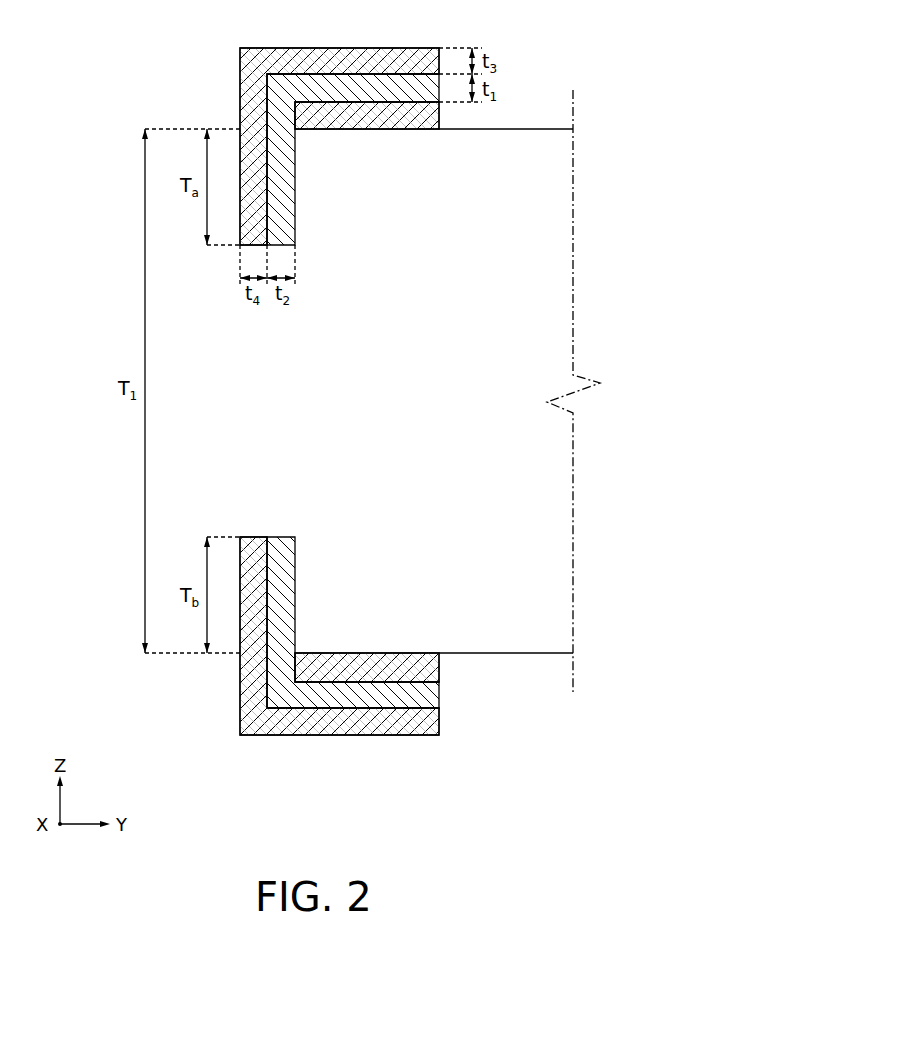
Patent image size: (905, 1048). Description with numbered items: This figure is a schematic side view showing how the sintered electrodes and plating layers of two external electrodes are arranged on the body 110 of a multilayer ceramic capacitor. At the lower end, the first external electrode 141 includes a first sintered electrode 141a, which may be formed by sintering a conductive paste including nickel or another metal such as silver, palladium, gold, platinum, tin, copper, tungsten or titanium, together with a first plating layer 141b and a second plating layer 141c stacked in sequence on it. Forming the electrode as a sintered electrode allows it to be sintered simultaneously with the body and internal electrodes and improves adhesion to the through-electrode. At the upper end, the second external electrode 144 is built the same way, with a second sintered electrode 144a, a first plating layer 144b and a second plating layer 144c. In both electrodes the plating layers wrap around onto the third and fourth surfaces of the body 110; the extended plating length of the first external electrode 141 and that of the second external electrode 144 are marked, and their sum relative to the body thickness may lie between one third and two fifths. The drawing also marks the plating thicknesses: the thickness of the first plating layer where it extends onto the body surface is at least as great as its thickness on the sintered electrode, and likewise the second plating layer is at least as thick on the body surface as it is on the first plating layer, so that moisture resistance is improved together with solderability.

The body 110 is at (488, 654).
The second external electrode 144 is at (270, 131).
The second sintered electrode 144a is at (300, 117).
The first plating layer 144b is at (282, 108).
The second plating layer 144c is at (253, 62).
The first external electrode 141 is at (270, 655).
The first sintered electrode 141a is at (305, 667).
The first plating layer 141b is at (286, 690).
The second plating layer 141c is at (256, 722).